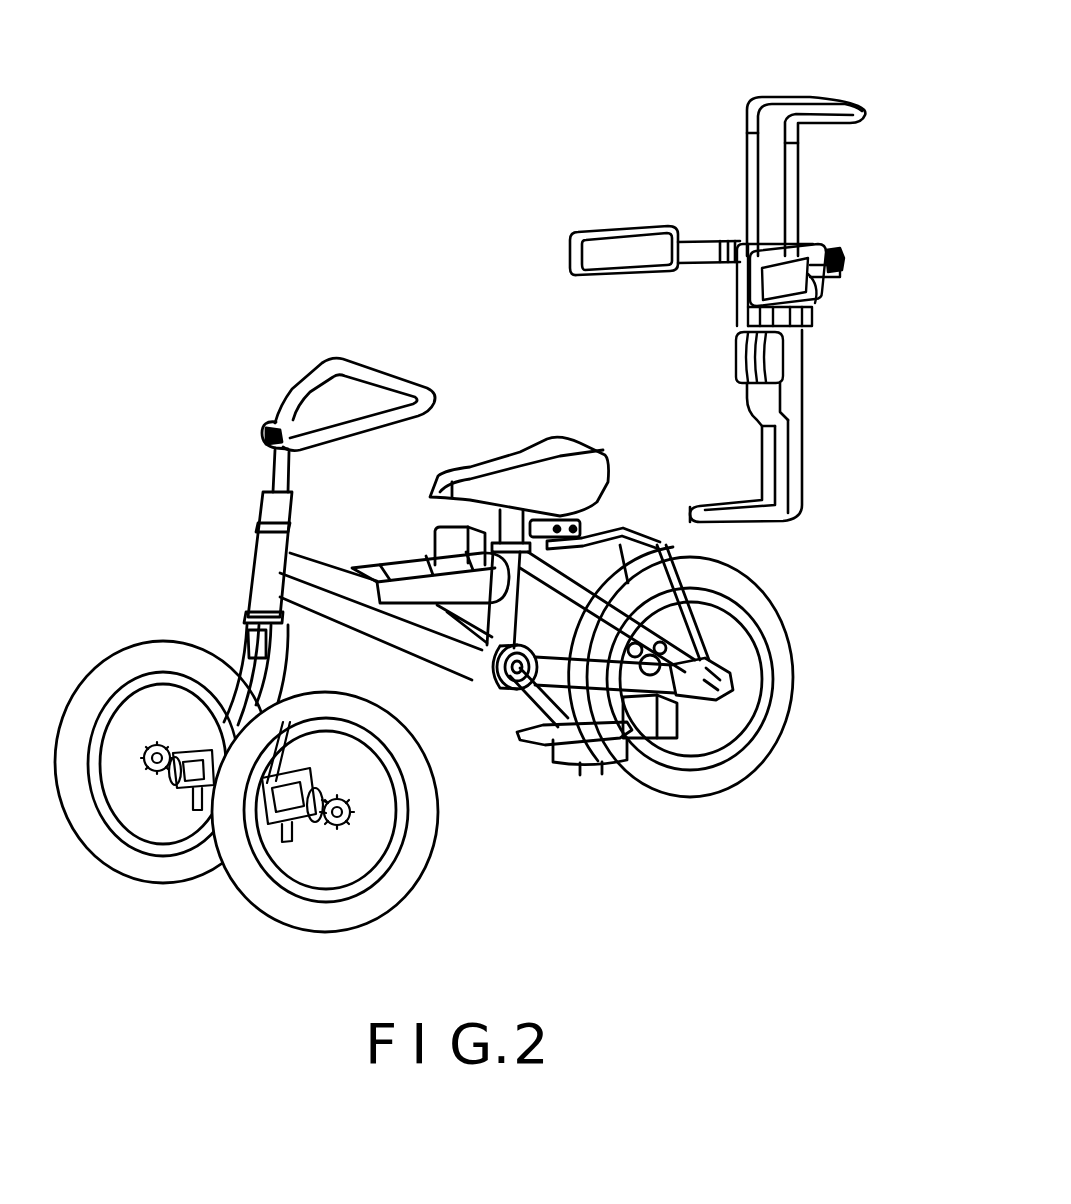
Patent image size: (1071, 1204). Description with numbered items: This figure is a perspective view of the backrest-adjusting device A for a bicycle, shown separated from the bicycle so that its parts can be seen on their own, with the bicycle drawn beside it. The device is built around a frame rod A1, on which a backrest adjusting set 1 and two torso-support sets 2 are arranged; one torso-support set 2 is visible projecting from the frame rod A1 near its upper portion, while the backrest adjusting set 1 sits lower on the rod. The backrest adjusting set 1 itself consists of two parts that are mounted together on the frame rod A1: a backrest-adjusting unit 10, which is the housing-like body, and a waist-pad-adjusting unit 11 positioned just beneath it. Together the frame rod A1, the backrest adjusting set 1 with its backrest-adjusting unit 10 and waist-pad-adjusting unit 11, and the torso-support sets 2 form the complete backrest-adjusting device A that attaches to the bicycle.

The backrest-adjusting device A is at (774, 82).
The frame rod A1 is at (797, 213).
The backrest adjusting set 1 is at (842, 274).
The torso-support set 2 is at (631, 228).
The backrest-adjusting unit 10 is at (720, 292).
The waist-pad-adjusting unit 11 is at (735, 364).